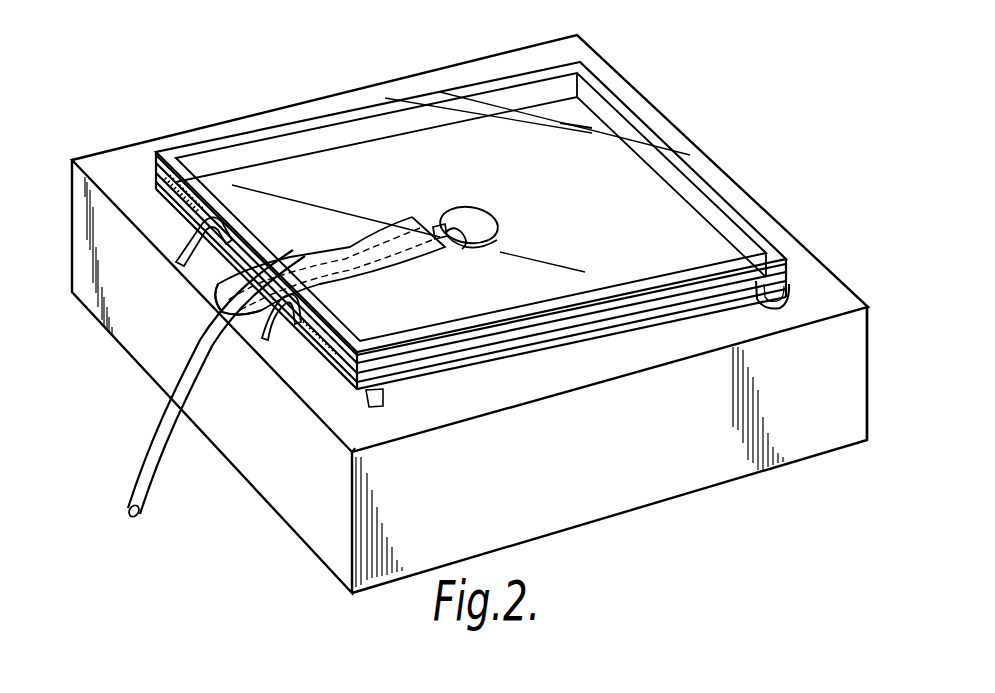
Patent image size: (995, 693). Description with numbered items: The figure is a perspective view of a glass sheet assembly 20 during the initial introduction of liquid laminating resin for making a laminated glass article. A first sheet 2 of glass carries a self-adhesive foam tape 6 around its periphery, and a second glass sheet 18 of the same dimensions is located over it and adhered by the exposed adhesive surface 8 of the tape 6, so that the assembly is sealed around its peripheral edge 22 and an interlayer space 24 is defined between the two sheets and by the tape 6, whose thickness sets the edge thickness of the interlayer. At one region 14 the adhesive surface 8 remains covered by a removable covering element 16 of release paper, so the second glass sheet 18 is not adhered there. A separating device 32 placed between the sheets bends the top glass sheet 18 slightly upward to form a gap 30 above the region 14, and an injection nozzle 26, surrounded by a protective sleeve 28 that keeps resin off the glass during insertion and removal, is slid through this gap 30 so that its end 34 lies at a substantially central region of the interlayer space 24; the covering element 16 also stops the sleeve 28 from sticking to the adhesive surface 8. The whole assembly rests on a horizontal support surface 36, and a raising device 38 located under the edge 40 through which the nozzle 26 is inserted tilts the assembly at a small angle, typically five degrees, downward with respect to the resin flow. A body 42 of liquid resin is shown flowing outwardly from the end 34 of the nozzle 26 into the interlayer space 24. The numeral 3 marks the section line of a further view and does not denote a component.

The sheet of glass 2 is at (511, 357).
The section line III-III 3 is at (362, 253).
The self-adhesive foam tape 6 is at (317, 335).
The adhesive surface 8 is at (190, 205).
The region 14 is at (196, 292).
The removable covering element 16 is at (200, 243).
The second glass sheet 18 is at (619, 94).
The glass sheet assembly 20 is at (713, 242).
The peripheral edge 22 is at (795, 289).
The interlayer space 24 is at (629, 162).
The injection nozzle 26 is at (437, 226).
The protective sleeve 28 is at (413, 253).
The gap 30 is at (253, 223).
The separating device 32 is at (193, 279).
The end of the nozzle 34 is at (458, 236).
The horizontal support surface 36 is at (823, 360).
The raising device 38 is at (351, 452).
The edge of the glass sheet assembly 40 is at (343, 383).
The body of liquid resin 42 is at (477, 218).